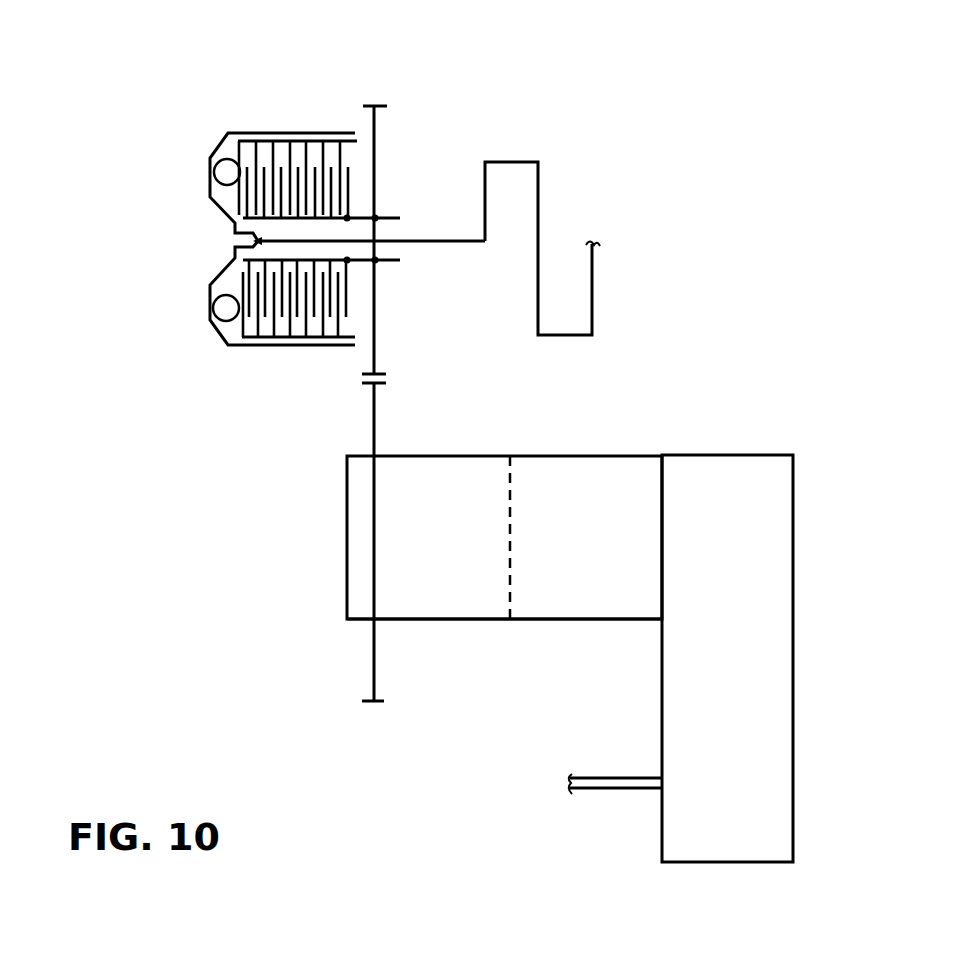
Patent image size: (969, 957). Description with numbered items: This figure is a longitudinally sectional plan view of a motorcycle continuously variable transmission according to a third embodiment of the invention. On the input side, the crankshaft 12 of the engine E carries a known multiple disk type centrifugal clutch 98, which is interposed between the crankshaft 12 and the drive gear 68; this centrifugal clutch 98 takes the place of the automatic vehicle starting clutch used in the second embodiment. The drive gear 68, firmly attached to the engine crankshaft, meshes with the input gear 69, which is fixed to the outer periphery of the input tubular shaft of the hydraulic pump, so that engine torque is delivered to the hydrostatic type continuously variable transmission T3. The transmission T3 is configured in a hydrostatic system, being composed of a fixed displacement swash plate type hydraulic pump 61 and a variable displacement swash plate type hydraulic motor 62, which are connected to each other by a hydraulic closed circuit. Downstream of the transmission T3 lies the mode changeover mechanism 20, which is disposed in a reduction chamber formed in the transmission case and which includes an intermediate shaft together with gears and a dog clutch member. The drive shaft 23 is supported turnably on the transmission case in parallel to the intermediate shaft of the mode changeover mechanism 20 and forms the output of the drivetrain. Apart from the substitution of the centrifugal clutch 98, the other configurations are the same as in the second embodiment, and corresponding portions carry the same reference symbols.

The multiple disk type centrifugal clutch 98 is at (280, 122).
The drive gear 68 is at (382, 104).
The input gear 69 is at (368, 705).
The crankshaft 12 is at (418, 243).
The engine E is at (574, 181).
The hydrostatic type continuously variable transmission T3 is at (587, 447).
The mode changeover mechanism 20 is at (800, 549).
The fixed displacement swash plate type hydraulic pump 61 is at (419, 630).
The variable displacement swash plate type hydraulic motor 62 is at (569, 630).
The drive shaft 23 is at (617, 790).